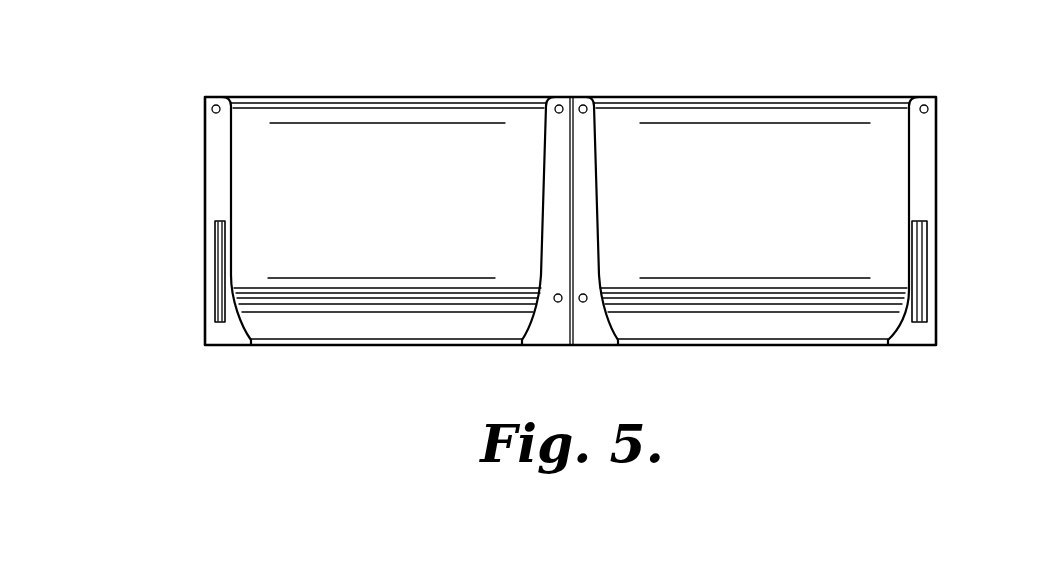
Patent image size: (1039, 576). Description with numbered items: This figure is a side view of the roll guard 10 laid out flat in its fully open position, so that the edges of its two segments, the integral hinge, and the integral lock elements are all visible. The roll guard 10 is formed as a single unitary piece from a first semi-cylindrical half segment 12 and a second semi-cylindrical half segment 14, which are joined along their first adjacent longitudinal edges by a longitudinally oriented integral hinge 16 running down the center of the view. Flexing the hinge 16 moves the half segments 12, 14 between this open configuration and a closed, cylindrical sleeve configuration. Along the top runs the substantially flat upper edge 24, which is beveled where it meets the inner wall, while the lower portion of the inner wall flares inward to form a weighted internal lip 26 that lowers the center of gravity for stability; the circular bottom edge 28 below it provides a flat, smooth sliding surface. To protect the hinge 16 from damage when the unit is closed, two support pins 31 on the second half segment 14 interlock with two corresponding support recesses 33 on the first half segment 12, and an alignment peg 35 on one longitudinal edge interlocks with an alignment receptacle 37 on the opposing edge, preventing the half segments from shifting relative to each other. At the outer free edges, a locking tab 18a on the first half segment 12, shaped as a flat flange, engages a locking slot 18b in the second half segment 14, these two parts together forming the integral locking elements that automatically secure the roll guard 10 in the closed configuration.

The roll guard 10 is at (847, 57).
The first semi-cylindrical half segment 12 is at (205, 94).
The second semi-cylindrical half segment 14 is at (937, 95).
The integral hinge 16 is at (570, 96).
The locking tab 18a is at (213, 262).
The locking slot 18b is at (927, 253).
The upper edge 24 is at (755, 96).
The weighted internal lip 26 is at (390, 347).
The circular bottom edge 28 is at (760, 348).
The support pins 31 is at (584, 105).
The support recesses 33 is at (558, 105).
The alignment peg 35 is at (212, 110).
The alignment receptacle 37 is at (944, 109).